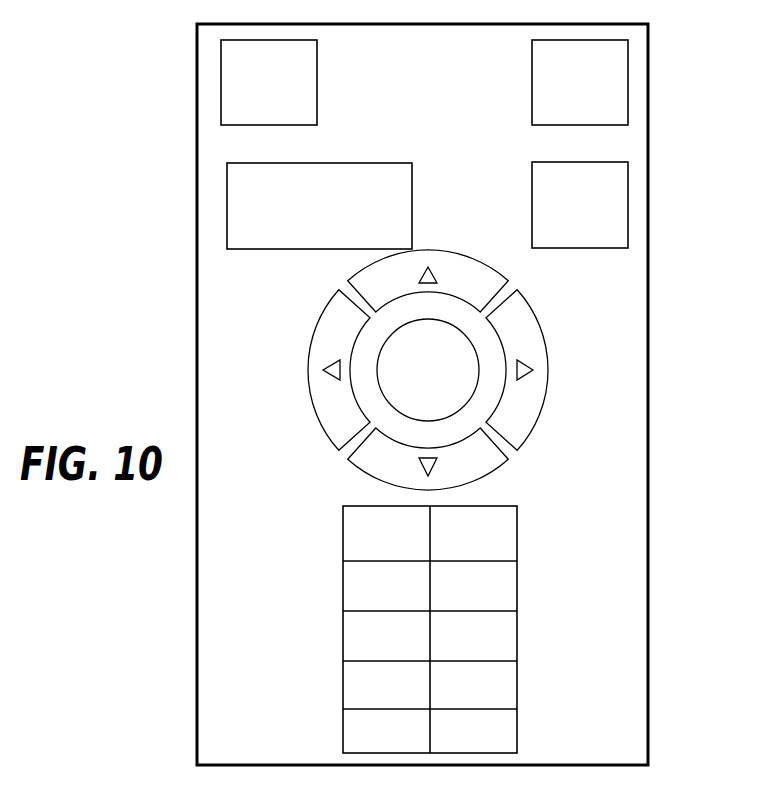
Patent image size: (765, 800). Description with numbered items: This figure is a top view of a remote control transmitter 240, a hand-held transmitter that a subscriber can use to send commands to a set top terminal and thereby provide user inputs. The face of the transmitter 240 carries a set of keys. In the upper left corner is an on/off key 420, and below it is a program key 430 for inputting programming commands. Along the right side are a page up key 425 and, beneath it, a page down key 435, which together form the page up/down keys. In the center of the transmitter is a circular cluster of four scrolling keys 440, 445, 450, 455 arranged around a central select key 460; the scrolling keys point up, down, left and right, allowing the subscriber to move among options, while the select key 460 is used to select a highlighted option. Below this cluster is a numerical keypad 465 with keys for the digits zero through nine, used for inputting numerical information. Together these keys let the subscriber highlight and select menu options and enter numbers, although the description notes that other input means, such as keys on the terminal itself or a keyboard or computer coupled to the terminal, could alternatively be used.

The remote control transmitter 240 is at (79, 406).
The on/off key 420 is at (200, 82).
The page up key 425 is at (637, 82).
The program key 430 is at (250, 205).
The page down key 435 is at (633, 205).
The scrolling key 440 is at (428, 256).
The scrolling key 445 is at (394, 467).
The scrolling key 450 is at (301, 370).
The scrolling key 455 is at (551, 370).
The select key 460 is at (487, 395).
The numerical keypad 465 is at (529, 626).